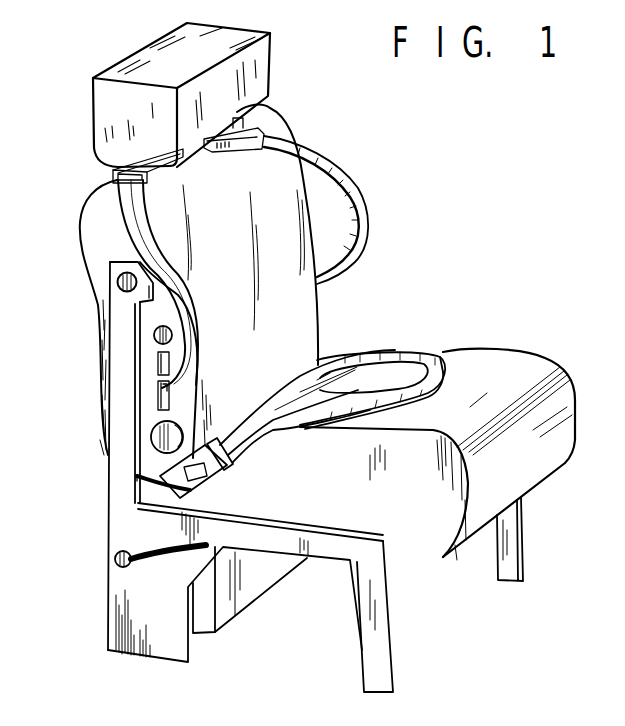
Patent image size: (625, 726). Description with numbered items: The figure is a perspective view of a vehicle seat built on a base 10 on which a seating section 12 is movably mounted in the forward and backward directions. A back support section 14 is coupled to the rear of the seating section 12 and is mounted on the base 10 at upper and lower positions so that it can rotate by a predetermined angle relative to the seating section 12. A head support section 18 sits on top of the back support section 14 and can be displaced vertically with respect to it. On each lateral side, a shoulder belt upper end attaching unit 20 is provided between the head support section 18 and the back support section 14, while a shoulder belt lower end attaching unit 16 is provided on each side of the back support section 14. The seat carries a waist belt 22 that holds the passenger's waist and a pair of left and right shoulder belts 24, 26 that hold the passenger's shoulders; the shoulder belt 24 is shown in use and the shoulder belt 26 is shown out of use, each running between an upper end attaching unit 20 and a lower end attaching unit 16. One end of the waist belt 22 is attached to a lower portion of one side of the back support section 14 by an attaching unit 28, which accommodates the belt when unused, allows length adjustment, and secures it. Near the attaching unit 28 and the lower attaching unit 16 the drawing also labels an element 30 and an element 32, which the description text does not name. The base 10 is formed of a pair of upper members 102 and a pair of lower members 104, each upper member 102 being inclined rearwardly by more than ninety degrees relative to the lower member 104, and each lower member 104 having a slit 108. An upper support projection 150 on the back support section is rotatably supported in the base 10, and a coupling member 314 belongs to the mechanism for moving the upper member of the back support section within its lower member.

The base 10 is at (112, 631).
The seating section 12 is at (427, 550).
The back support section 14 is at (86, 216).
The shoulder belt lower end attaching unit 16 is at (158, 371).
The head support section 18 is at (100, 123).
The shoulder belt upper end attaching unit 20 is at (112, 176).
The waist belt 22 is at (400, 357).
The shoulder belt 24 is at (128, 229).
The shoulder belt 26 is at (328, 166).
The attaching unit 28 is at (182, 487).
The knob 30 is at (173, 335).
The buckle tongue 32 is at (229, 468).
The upper member 102 is at (116, 298).
The lower member 104 is at (163, 657).
The slit 108 is at (157, 564).
The upper support projection 150 is at (116, 276).
The coupling member 314 is at (152, 438).